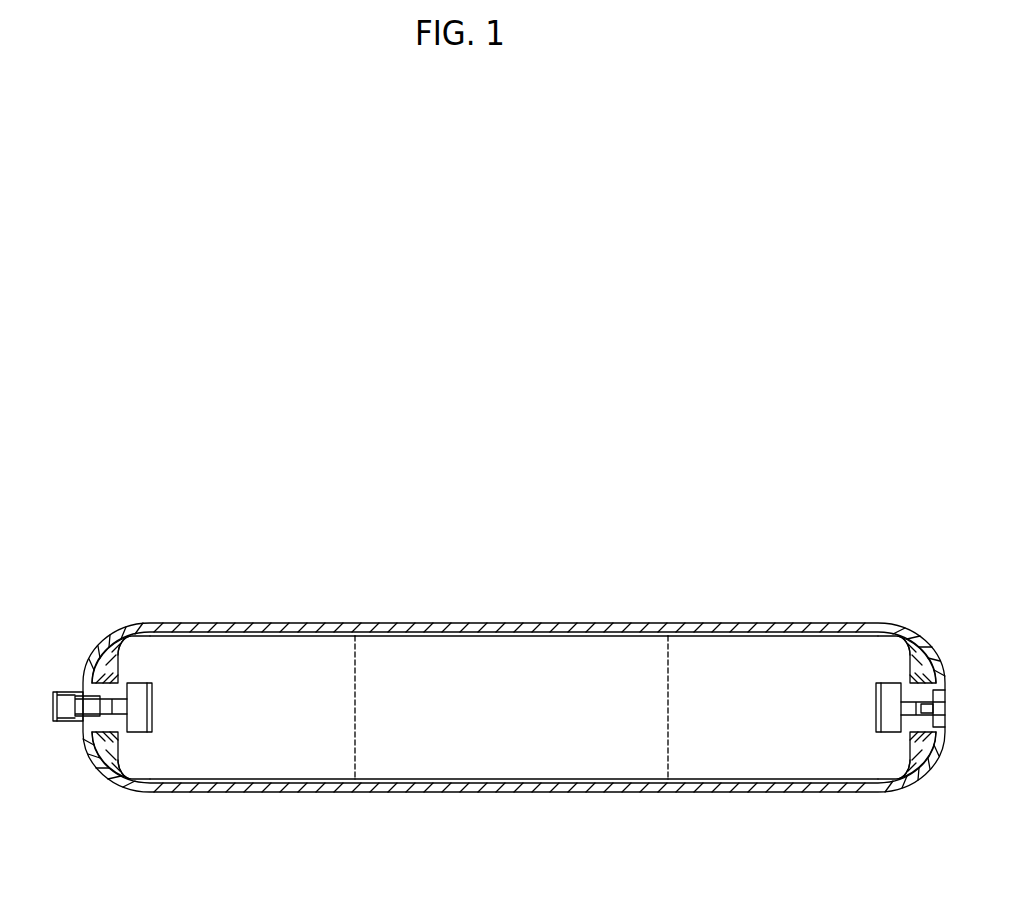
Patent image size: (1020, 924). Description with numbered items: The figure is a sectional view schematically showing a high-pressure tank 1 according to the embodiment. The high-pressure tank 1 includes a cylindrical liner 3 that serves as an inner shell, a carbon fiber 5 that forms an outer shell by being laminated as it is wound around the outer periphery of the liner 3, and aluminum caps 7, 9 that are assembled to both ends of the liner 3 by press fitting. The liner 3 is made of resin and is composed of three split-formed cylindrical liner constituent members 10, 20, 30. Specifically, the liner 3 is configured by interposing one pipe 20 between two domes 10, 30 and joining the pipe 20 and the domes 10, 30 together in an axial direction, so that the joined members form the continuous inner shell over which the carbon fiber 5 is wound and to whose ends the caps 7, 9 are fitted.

The high-pressure tank 1 is at (216, 610).
The liner 3 is at (462, 632).
The carbon fiber 5 is at (820, 792).
The aluminum cap 7 is at (98, 745).
The aluminum cap 9 is at (928, 746).
The dome 10 is at (241, 747).
The pipe 20 is at (513, 735).
The dome 30 is at (730, 752).